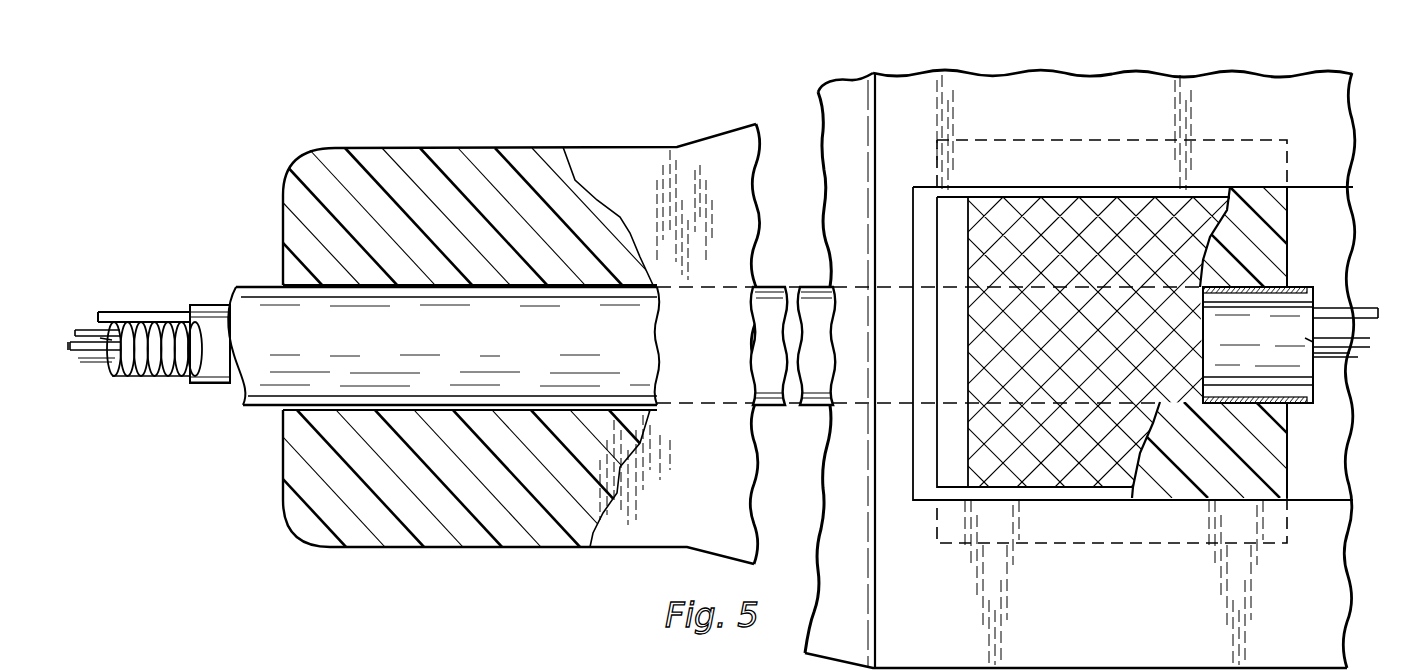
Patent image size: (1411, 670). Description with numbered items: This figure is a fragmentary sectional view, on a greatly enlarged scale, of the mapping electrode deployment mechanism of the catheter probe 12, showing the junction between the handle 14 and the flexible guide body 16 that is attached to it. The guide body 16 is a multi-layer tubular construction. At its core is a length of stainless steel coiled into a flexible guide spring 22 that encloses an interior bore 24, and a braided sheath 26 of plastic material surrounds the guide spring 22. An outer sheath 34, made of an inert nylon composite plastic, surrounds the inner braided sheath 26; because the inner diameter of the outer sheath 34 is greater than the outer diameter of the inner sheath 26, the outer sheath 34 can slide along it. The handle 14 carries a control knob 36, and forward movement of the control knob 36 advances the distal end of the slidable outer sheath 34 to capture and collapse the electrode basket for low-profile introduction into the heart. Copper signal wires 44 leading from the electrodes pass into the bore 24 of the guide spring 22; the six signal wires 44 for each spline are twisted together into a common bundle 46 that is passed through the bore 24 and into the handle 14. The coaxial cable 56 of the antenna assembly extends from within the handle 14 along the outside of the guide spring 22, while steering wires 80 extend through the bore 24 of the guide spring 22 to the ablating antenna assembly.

The catheter probe 12 is at (400, 128).
The handle 14 is at (1112, 119).
The flexible guide body 16 is at (267, 283).
The guide spring 22 is at (149, 376).
The interior bore 24 is at (100, 338).
The braided sheath 26 is at (209, 383).
The outer sheath 34 is at (316, 345).
The control knob 36 is at (1036, 256).
The signal wires 44 is at (74, 340).
The common bundle 46 is at (98, 352).
The coaxial cable 56 is at (157, 316).
The steering wires 80 is at (112, 340).